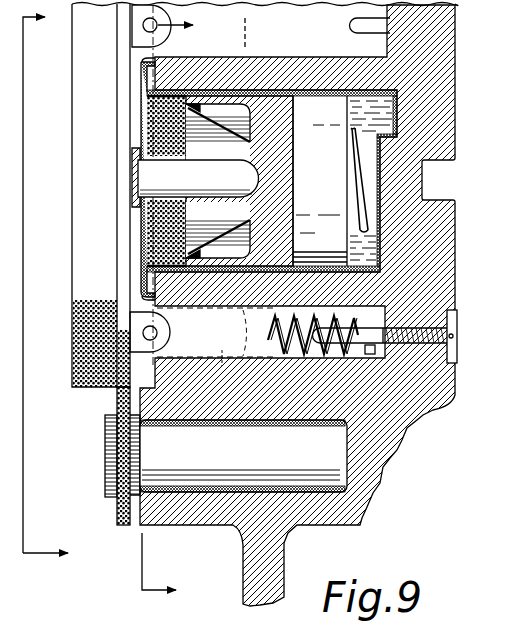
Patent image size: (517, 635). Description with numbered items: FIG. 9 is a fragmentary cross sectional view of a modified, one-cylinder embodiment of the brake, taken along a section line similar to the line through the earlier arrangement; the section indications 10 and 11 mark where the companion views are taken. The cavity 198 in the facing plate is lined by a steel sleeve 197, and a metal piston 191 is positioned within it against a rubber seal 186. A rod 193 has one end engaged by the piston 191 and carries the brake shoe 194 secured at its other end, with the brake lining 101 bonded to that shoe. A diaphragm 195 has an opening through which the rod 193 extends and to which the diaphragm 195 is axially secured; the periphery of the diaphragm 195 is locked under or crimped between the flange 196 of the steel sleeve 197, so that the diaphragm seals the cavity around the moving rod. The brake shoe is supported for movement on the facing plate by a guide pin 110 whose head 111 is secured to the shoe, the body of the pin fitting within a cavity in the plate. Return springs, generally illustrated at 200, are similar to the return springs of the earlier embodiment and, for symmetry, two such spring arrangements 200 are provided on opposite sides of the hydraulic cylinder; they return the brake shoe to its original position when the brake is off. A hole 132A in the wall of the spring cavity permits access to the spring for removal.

The section line 10- 10 is at (182, 309).
The section line 11- 11 is at (55, 288).
The brake lining 101 is at (85, 264).
The guide pin 110 is at (318, 442).
The head 111 is at (105, 465).
The hole 132A is at (222, 368).
The rubber seal 186 is at (329, 114).
The piston 191 is at (267, 132).
The rod 193 is at (226, 176).
The brake shoe 194 is at (126, 133).
The diaphragm 195 is at (141, 107).
The flange 196 is at (145, 95).
The steel sleeve 197 is at (171, 262).
The cavity 198 is at (373, 248).
The return springs 200 is at (262, 333).